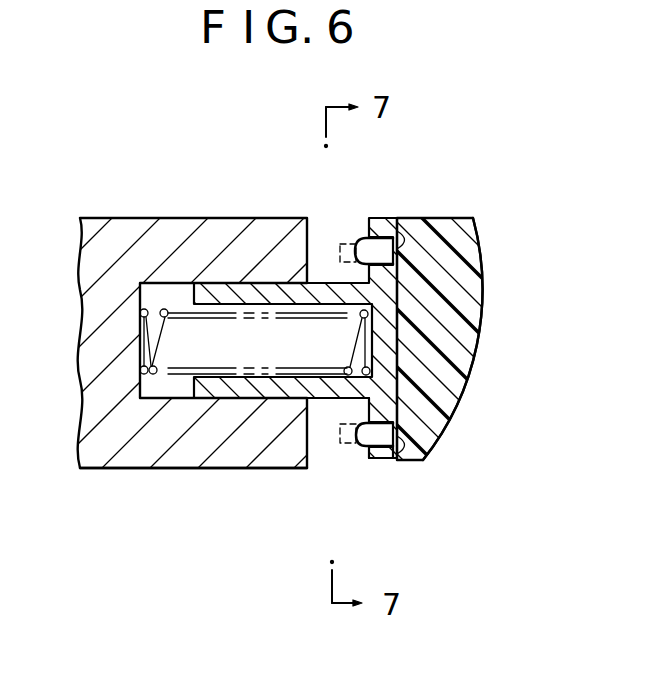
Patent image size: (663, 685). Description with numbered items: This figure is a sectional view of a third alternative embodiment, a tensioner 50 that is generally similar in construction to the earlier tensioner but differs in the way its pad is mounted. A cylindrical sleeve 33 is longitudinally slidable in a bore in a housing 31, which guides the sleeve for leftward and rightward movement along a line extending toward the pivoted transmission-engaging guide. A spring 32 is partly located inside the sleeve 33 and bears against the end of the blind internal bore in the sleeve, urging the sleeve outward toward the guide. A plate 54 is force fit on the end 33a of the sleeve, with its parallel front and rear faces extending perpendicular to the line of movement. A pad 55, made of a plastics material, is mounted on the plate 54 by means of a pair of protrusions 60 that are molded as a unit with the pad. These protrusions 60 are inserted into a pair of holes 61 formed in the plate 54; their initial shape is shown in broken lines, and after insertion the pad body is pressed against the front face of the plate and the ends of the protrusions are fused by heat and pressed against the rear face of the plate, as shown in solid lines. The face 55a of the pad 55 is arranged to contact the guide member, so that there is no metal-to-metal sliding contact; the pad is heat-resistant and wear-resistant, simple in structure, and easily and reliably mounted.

The housing 31 is at (100, 475).
The spring 32 is at (155, 377).
The cylindrical sleeve 33 is at (320, 421).
The end of the sleeve 33a is at (327, 405).
The tensioner 50 is at (238, 207).
The plate 54 is at (396, 464).
The pad 55 is at (445, 208).
The face of the pad 55a is at (460, 407).
The protrusions 60 is at (350, 243).
The holes 61 is at (397, 240).